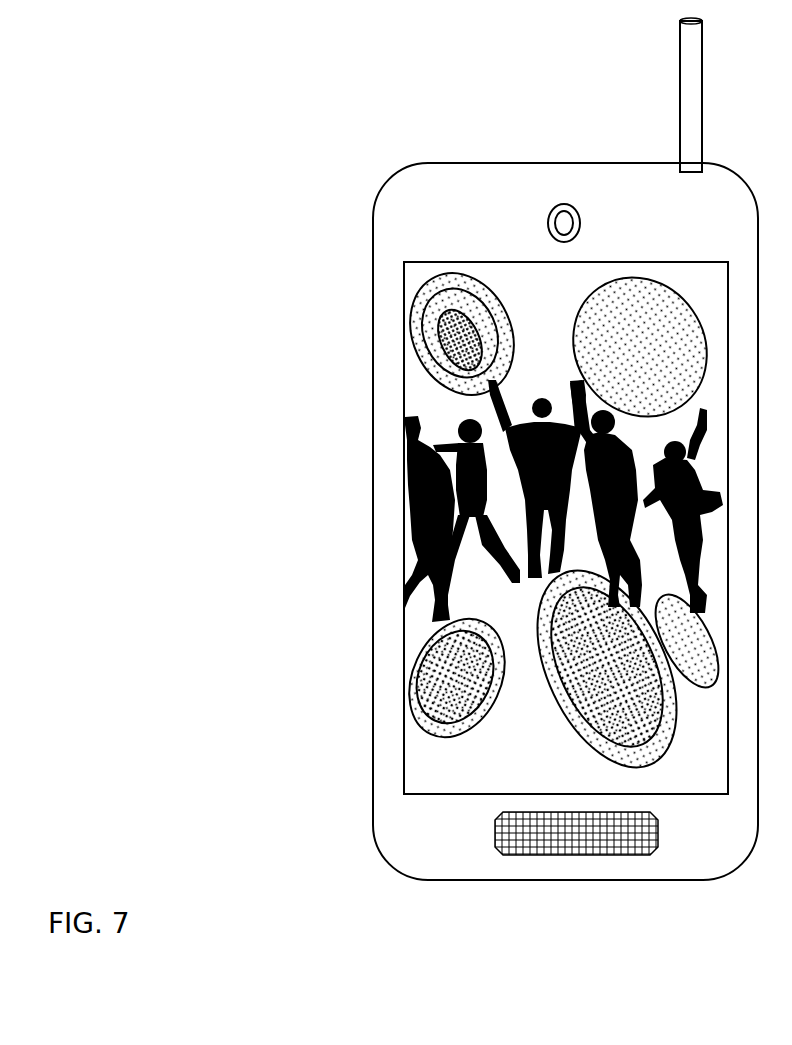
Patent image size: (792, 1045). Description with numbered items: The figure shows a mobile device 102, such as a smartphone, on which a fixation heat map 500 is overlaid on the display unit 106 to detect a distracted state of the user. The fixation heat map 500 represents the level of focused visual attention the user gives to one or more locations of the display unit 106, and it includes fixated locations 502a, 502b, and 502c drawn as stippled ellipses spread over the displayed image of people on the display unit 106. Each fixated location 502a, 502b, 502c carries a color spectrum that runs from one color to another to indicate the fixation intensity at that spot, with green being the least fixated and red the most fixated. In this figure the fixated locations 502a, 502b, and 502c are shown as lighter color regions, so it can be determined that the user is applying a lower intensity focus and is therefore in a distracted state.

The mobile device 102 is at (380, 176).
The display unit 106 is at (707, 785).
The fixation heat map 500 is at (532, 731).
The fixated location 502a is at (571, 298).
The fixated location 502b is at (439, 750).
The fixated location 502c is at (527, 354).